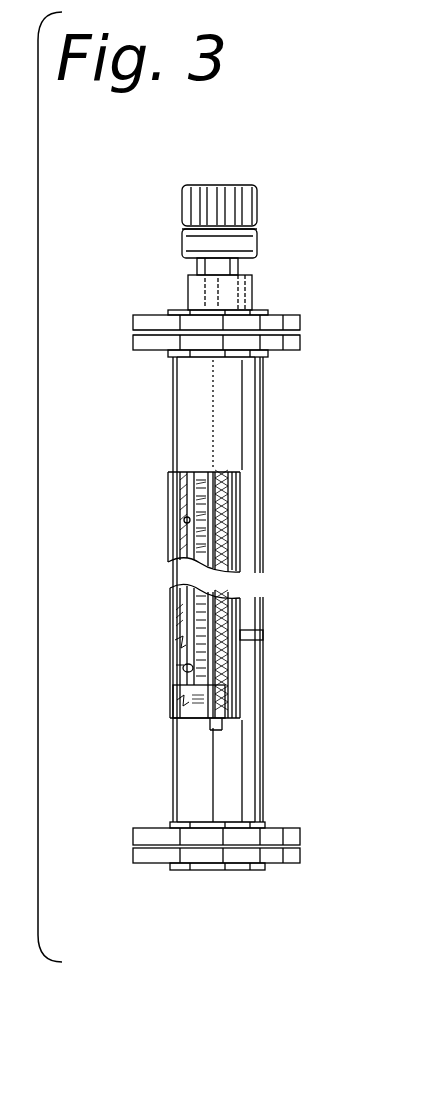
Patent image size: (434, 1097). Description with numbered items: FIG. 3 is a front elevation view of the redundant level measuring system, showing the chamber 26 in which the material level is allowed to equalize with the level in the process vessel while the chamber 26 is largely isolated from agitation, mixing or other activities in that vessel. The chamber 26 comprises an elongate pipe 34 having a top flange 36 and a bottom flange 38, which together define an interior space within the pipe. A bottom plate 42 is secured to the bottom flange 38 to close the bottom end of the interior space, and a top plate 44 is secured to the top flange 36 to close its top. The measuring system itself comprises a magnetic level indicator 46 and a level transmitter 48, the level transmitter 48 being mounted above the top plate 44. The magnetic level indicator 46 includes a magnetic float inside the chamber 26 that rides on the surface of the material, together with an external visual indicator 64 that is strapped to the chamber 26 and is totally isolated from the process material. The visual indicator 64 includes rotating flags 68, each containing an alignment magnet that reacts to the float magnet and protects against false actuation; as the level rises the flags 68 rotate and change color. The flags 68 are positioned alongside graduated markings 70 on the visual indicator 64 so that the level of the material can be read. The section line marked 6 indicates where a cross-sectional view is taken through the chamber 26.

The section line 6- 6 is at (217, 140).
The chamber 26 is at (288, 413).
The elongate pipe 34 is at (242, 759).
The top flange 36 is at (290, 345).
The bottom flange 38 is at (283, 828).
The bottom plate 42 is at (288, 862).
The top plate 44 is at (284, 314).
The magnetic level indicator 46 is at (161, 497).
The level transmitter 48 is at (272, 203).
The visual indicator 64 is at (178, 549).
The rotating flags 68 is at (228, 522).
The graduated markings 70 is at (173, 658).